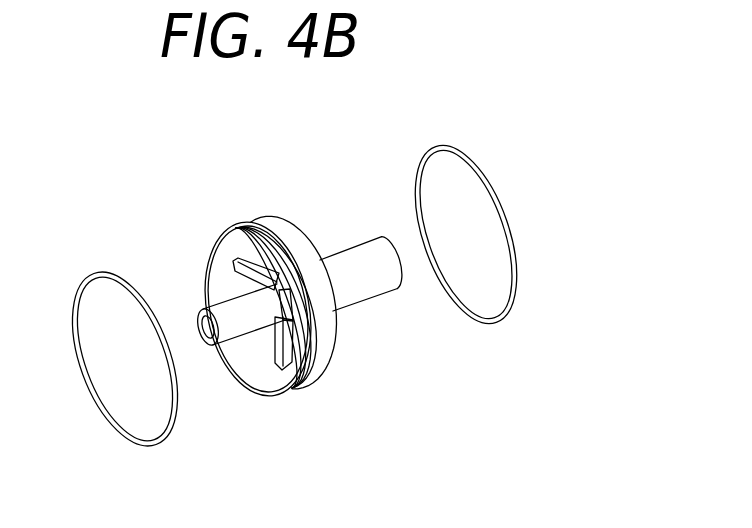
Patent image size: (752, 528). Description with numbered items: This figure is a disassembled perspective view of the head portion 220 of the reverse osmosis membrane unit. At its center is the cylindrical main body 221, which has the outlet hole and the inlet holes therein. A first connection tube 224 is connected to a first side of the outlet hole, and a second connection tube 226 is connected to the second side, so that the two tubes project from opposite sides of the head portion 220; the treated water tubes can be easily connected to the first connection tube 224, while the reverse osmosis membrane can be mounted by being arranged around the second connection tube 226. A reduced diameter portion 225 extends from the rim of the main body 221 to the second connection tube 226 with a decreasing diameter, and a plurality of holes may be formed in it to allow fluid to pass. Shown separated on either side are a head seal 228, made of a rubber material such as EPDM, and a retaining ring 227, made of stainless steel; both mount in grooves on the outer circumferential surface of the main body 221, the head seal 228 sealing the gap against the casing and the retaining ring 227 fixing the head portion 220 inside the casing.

The head portion 220 is at (234, 197).
The main body 221 is at (312, 383).
The first connection tube 224 is at (231, 315).
The reduced diameter portion 225 is at (332, 345).
The second connection tube 226 is at (361, 282).
The retaining ring 227 is at (97, 276).
The head seal 228 is at (438, 151).